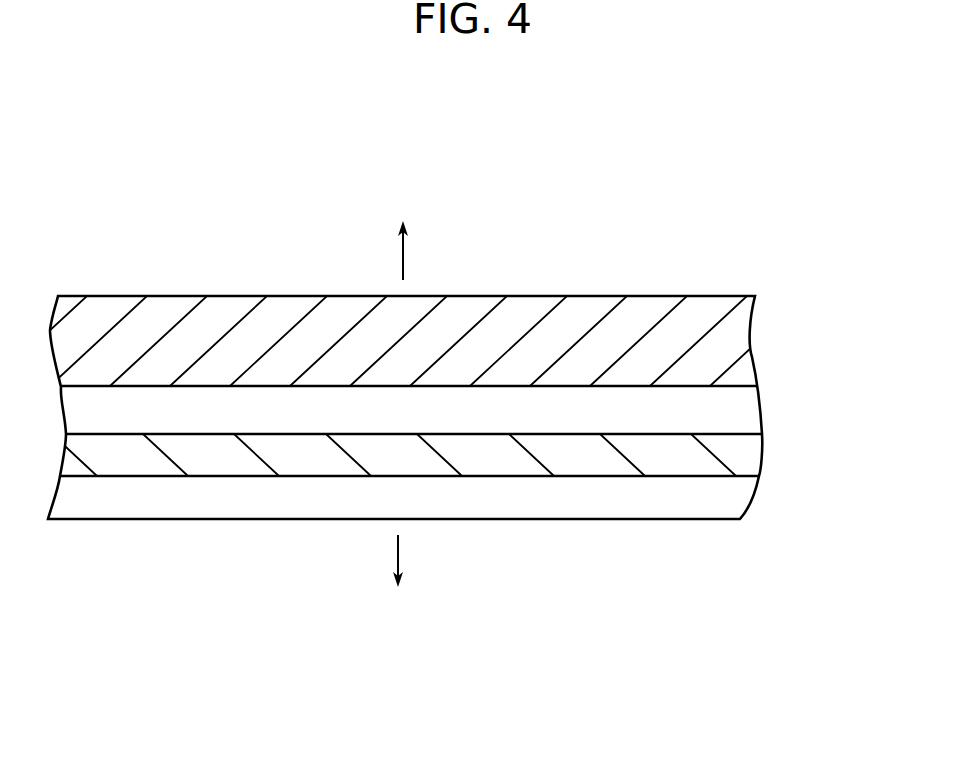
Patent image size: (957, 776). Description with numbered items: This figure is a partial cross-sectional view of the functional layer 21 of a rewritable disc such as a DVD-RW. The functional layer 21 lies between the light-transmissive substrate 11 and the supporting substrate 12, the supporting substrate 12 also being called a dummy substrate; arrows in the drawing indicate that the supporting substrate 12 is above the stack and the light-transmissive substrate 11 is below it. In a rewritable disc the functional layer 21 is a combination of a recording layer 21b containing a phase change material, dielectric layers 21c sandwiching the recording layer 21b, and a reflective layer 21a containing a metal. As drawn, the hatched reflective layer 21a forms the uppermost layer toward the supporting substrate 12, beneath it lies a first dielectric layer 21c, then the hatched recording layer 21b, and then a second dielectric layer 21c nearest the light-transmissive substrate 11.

The functional layer 21 is at (830, 187).
The reflective layer 21a is at (732, 347).
The recording layer 21b is at (728, 452).
The dielectric layers 21c is at (731, 410).
The supporting substrate 12 is at (399, 231).
The light-transmissive substrate 11 is at (391, 584).